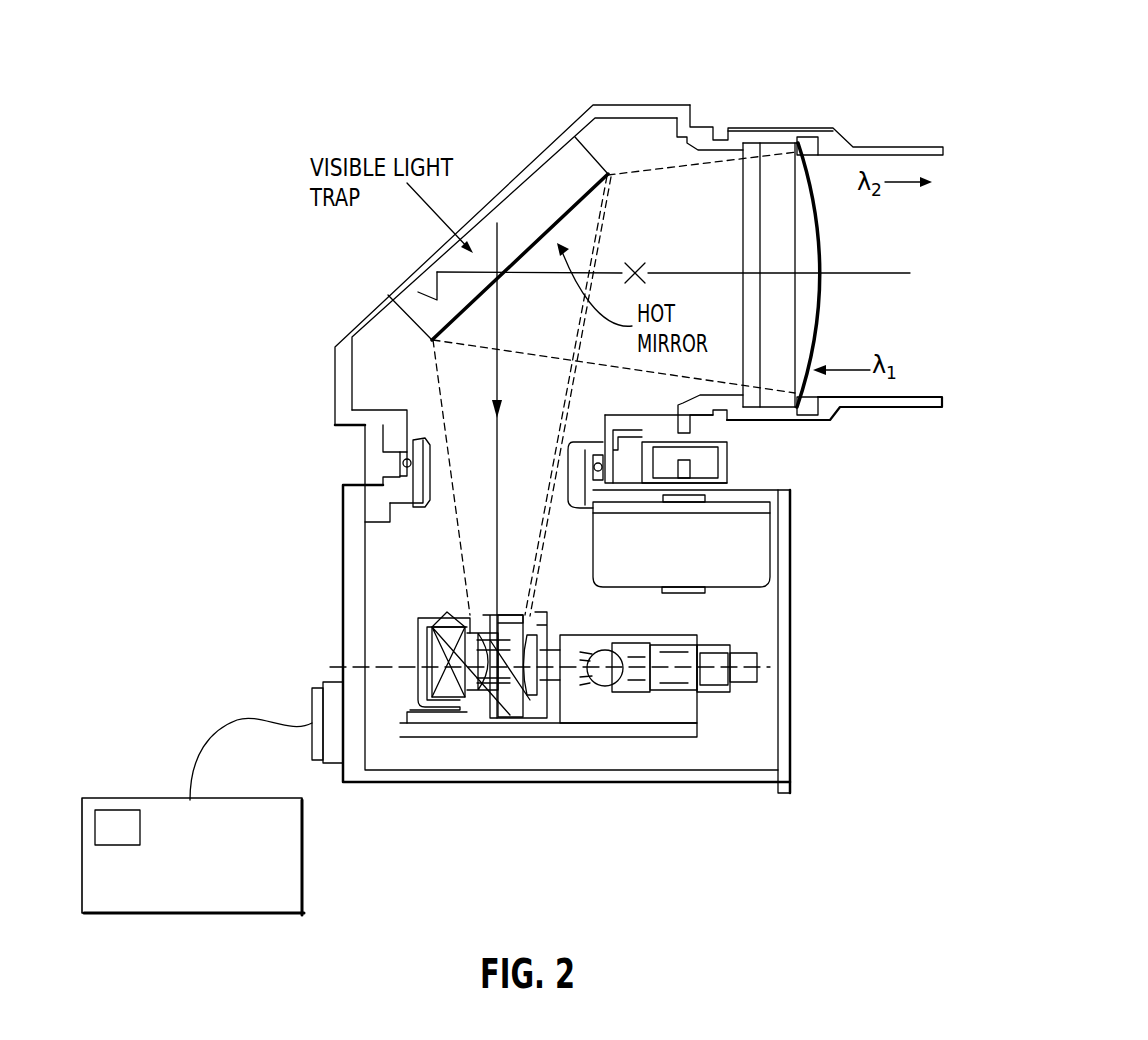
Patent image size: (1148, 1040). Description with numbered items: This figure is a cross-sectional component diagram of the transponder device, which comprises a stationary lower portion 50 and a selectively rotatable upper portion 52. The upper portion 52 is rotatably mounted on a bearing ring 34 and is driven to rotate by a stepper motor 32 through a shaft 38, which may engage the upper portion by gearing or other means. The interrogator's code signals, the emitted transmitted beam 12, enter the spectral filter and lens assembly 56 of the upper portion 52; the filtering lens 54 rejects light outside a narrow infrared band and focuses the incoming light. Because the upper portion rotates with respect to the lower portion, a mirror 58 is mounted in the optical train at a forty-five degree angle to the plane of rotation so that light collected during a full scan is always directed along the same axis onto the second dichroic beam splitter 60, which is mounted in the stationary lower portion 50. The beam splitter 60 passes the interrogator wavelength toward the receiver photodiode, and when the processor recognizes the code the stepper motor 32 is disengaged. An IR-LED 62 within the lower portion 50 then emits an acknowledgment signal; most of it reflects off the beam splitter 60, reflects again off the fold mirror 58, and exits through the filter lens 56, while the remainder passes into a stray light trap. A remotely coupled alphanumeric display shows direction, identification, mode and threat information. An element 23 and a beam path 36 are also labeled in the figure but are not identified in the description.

The transmitted beam 12 is at (832, 242).
The filter 23 is at (752, 155).
The stepper motor 32 is at (762, 550).
The bearing ring 34 is at (377, 457).
The reflected beam 36 is at (498, 452).
The shaft 38 is at (693, 468).
The stationary lower portion 50 is at (343, 570).
The selectively rotatable upper portion 52 is at (373, 312).
The filtering lens 54 is at (810, 317).
The spectral filter and lens assembly 56 is at (789, 114).
The mirror 58 is at (572, 205).
The second dichroic beam splitter 60 is at (512, 713).
The IR-LED 62 is at (753, 662).